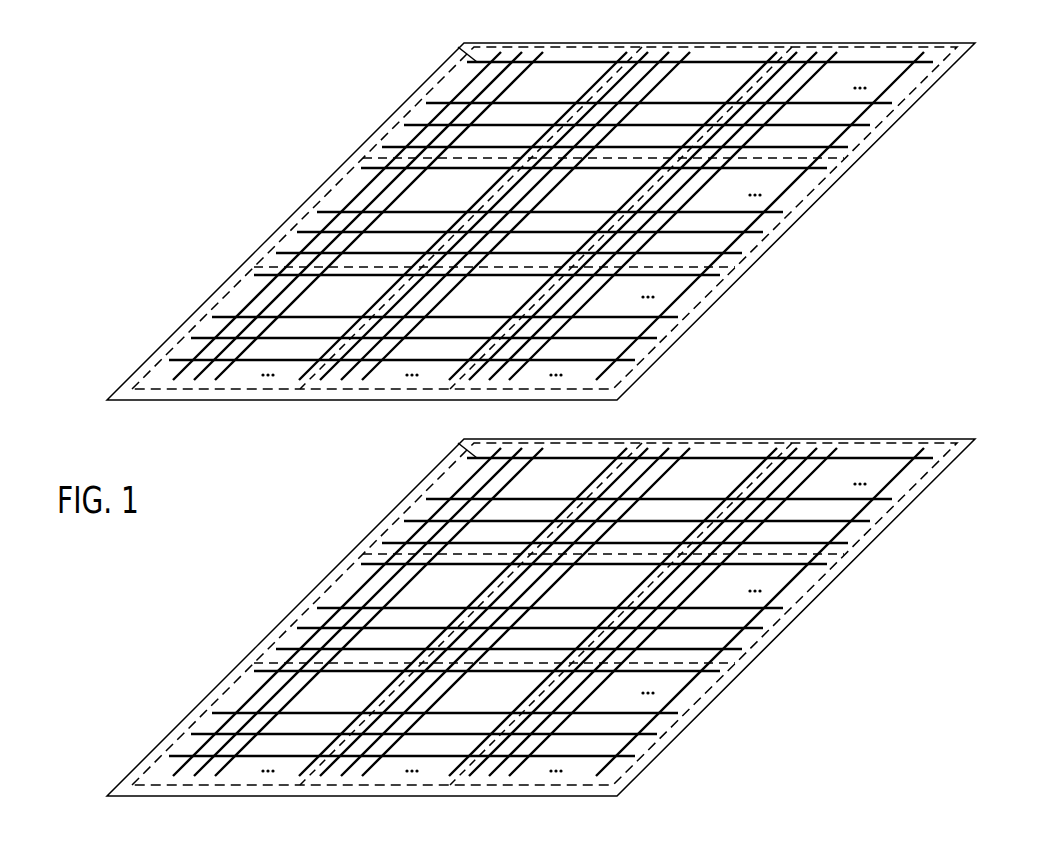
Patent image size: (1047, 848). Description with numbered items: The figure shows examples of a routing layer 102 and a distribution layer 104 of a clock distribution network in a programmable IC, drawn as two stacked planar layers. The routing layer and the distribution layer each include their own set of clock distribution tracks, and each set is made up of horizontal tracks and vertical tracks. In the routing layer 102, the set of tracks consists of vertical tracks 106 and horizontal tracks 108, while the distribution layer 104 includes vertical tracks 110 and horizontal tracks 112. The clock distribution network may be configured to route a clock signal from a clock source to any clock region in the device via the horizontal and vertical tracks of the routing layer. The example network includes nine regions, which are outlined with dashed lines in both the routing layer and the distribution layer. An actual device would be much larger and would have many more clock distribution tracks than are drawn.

The routing layer 102 is at (566, 237).
The distribution layer 104 is at (566, 635).
The vertical tracks 106 is at (544, 246).
The horizontal tracks 108 is at (539, 197).
The vertical tracks 110 is at (546, 643).
The horizontal tracks 112 is at (539, 593).